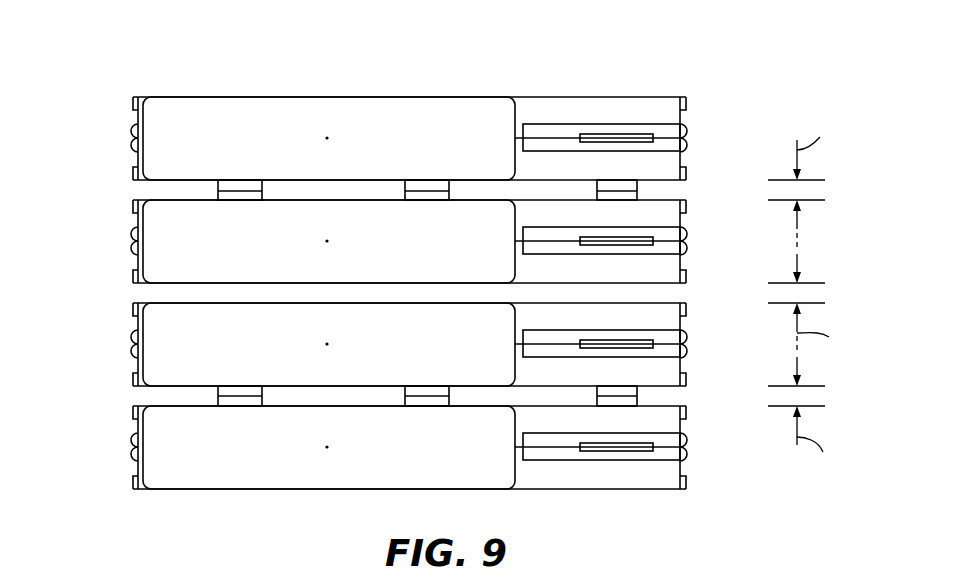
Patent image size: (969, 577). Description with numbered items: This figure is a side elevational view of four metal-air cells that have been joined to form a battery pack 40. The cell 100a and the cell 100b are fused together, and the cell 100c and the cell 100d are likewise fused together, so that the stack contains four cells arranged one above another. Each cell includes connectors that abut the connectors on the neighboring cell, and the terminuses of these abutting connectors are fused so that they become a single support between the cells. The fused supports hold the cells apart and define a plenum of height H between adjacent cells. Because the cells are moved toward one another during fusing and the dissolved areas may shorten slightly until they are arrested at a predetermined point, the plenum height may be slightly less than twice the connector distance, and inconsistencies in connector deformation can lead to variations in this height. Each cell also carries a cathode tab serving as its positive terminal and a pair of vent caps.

The battery pack 40 is at (687, 46).
The cell 100a is at (121, 127).
The cell 100b is at (121, 228).
The cell 100c is at (121, 332).
The cell 100d is at (121, 464).